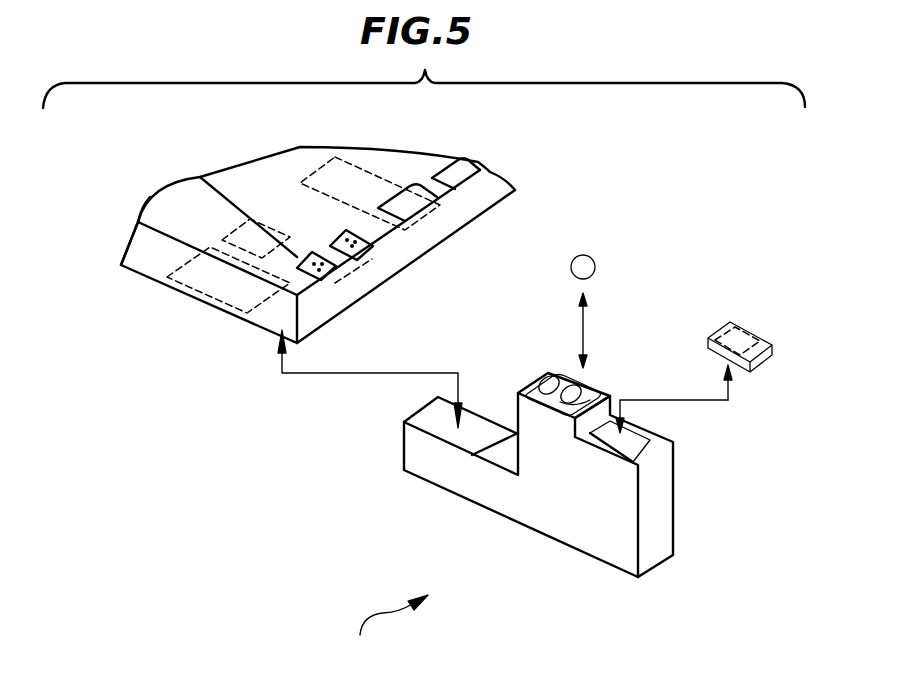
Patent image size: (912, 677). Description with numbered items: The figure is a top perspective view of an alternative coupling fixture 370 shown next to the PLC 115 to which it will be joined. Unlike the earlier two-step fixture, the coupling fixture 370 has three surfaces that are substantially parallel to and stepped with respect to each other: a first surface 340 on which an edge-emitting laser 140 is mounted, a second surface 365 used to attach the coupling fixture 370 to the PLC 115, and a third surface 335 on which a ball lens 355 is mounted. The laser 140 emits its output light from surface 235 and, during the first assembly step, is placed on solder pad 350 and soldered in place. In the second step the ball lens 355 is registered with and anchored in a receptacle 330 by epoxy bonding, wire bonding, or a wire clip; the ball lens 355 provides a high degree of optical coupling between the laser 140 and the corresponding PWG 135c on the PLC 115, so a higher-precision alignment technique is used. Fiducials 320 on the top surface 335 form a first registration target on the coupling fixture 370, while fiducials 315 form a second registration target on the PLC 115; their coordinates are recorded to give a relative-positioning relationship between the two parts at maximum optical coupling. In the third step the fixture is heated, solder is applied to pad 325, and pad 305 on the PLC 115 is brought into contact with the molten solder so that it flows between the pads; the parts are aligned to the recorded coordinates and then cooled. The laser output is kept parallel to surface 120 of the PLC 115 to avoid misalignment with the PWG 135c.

The PLC 115 is at (200, 177).
The surface 120 is at (258, 170).
The fiducials 315 is at (347, 242).
The PWG 135c is at (146, 203).
The pad 305 is at (185, 300).
The pad 325 is at (413, 412).
The second surface 365 is at (500, 452).
The fiducials 320 is at (553, 373).
The third surface 335 is at (590, 383).
The receptacle 330 is at (597, 383).
The ball lens 355 is at (596, 267).
The surface 235 is at (712, 330).
The edge-emitting laser 140 is at (752, 332).
The solder pad 350 is at (648, 418).
The first surface 340 is at (641, 460).
The coupling fixture 370 is at (383, 627).